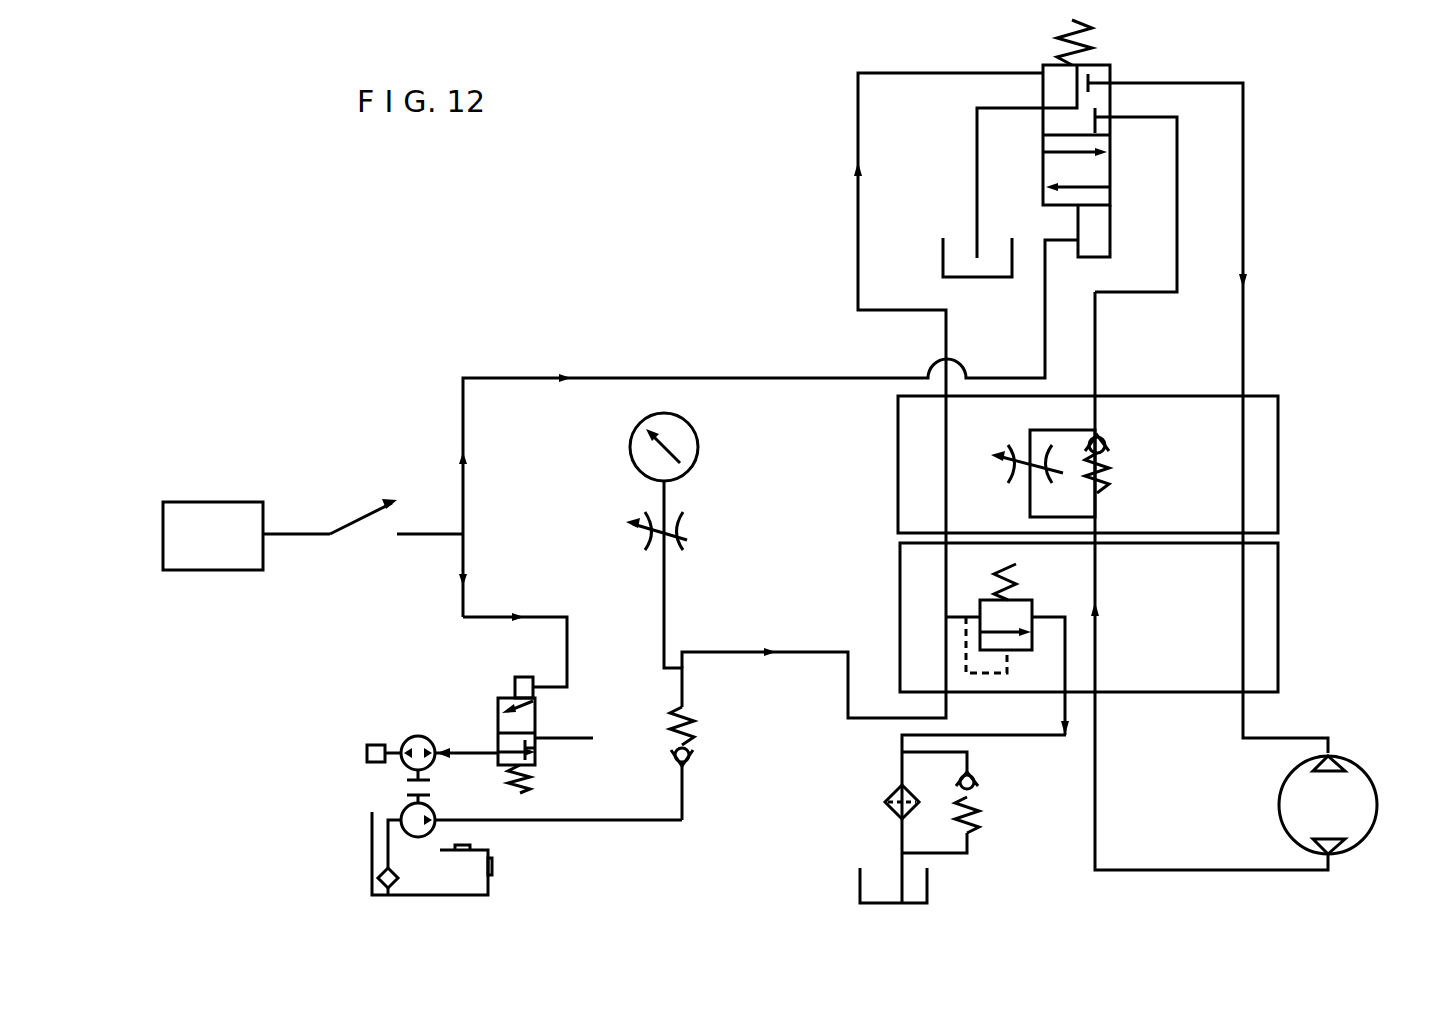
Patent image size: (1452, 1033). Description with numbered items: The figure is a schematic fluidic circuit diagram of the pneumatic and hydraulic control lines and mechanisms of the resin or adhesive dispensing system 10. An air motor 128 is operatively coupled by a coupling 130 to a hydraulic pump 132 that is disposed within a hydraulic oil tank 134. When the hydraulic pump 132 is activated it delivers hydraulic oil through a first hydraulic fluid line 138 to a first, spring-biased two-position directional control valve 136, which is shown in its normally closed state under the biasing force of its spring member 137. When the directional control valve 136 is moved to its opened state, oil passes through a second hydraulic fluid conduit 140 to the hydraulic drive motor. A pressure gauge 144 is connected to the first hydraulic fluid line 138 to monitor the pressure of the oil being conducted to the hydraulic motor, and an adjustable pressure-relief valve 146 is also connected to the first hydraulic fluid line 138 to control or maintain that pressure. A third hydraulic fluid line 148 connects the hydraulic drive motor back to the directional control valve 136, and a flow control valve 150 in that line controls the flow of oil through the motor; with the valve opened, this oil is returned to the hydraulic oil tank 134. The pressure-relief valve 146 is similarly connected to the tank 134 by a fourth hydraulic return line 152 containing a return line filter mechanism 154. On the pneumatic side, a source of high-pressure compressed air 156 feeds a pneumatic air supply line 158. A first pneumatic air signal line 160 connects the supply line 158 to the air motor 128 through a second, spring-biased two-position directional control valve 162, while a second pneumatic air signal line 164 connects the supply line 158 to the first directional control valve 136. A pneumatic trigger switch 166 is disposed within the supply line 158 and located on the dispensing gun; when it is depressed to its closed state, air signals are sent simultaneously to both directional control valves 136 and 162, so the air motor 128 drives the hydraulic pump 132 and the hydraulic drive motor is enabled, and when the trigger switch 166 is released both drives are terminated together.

The resin or adhesive dispensing system 10 is at (382, 339).
The air motor 128 is at (400, 760).
The coupling 130 is at (400, 787).
The hydraulic pump 132 is at (437, 813).
The hydraulic oil tank 134 is at (470, 905).
The first two-position directional control valve 136 is at (1112, 166).
The spring member 137 is at (1112, 32).
The first hydraulic fluid line 138 is at (950, 451).
The second hydraulic fluid conduit 140 is at (1247, 324).
The pressure gauge 144 is at (698, 450).
The adjustable pressure-relief valve 146 is at (1034, 606).
The third hydraulic fluid line 148 is at (1100, 577).
The flow control valve 150 is at (1030, 497).
The fourth hydraulic fluid return line 152 is at (900, 737).
The return line filter mechanism 154 is at (890, 795).
The source of high-pressure compressed air 156 is at (214, 515).
The pneumatic air supply line 158 is at (300, 530).
The first pneumatic air signal line 160 is at (487, 618).
The second two-position directional control valve 162 is at (497, 718).
The second pneumatic air signal line 164 is at (465, 422).
The pneumatic trigger switch 166 is at (378, 500).